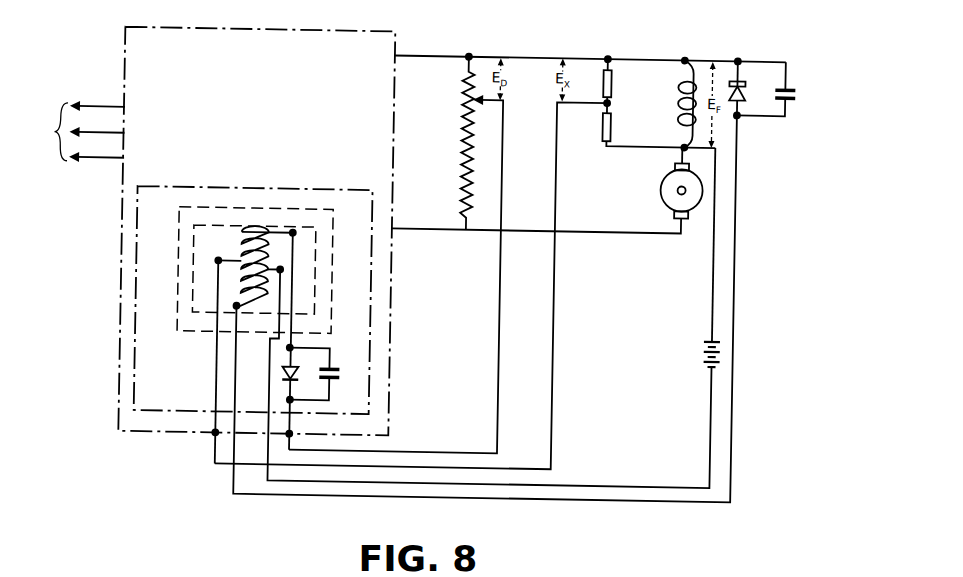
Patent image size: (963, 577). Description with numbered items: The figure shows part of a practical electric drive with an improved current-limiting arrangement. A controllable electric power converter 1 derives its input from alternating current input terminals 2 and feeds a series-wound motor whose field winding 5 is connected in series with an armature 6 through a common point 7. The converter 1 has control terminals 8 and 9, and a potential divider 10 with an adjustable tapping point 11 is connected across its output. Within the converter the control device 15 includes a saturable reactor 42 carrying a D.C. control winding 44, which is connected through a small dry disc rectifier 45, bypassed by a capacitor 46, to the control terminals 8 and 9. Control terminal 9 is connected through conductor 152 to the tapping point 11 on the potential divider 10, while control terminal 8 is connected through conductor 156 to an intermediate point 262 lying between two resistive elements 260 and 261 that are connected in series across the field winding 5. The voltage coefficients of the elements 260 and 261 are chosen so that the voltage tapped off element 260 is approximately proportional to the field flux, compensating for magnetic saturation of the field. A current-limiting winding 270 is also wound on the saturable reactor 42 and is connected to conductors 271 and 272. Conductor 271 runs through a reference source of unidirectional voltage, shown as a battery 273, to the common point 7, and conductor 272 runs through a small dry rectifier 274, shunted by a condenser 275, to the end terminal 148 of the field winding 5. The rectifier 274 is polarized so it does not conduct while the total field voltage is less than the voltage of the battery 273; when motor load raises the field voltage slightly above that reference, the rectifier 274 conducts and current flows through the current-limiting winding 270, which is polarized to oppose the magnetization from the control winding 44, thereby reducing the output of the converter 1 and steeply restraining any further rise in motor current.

The controllable electric power converter 1 is at (241, 33).
The alternating current input terminals 2 is at (81, 131).
The field winding 5 is at (677, 98).
The armature 6 is at (659, 188).
The common point 7 is at (680, 143).
The control terminal 8 is at (216, 439).
The control terminal 9 is at (291, 440).
The potential divider 10 is at (462, 162).
The tapping point 11 is at (476, 104).
The control device 15 is at (222, 192).
The saturable reactor 42 is at (206, 255).
The control winding 44 is at (270, 237).
The dry disc rectifier 45 is at (283, 377).
The capacitor 46 is at (334, 368).
The end terminal of the field winding 148 is at (681, 56).
The conductor 152 is at (458, 453).
The conductor 156 is at (421, 467).
The resistive element 260 is at (610, 78).
The resistive element 261 is at (610, 125).
The intermediate point 262 is at (610, 101).
The current-limiting winding 270 is at (245, 311).
The conductor 271 is at (711, 426).
The conductor 272 is at (736, 426).
The battery 273 is at (704, 348).
The dry rectifier 274 is at (738, 77).
The condenser 275 is at (788, 82).